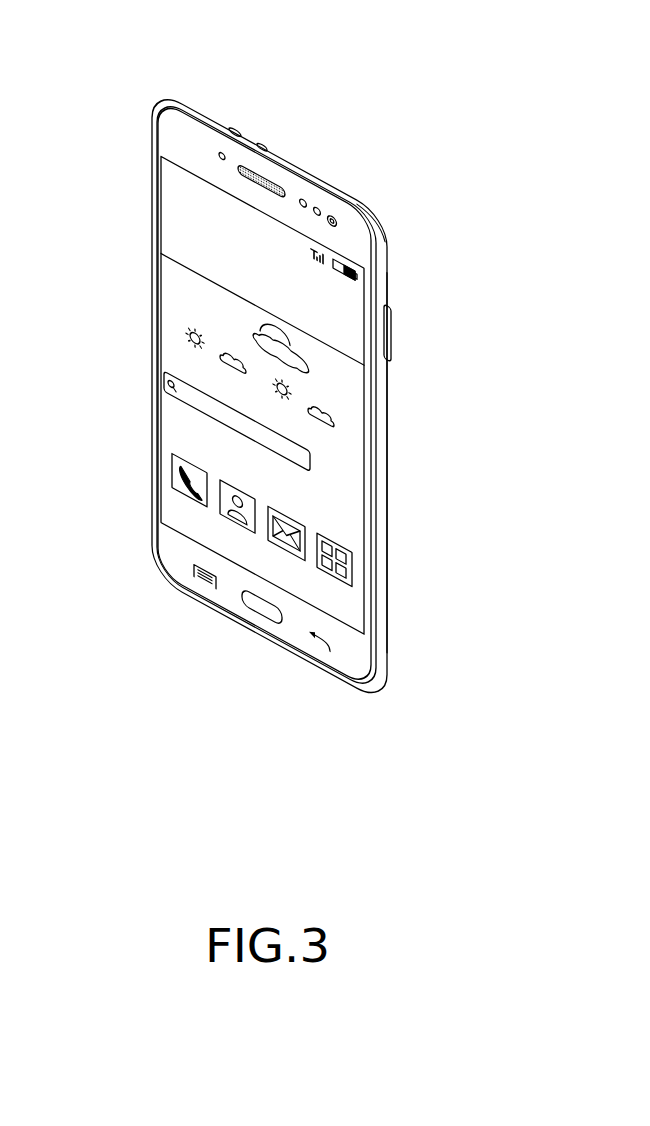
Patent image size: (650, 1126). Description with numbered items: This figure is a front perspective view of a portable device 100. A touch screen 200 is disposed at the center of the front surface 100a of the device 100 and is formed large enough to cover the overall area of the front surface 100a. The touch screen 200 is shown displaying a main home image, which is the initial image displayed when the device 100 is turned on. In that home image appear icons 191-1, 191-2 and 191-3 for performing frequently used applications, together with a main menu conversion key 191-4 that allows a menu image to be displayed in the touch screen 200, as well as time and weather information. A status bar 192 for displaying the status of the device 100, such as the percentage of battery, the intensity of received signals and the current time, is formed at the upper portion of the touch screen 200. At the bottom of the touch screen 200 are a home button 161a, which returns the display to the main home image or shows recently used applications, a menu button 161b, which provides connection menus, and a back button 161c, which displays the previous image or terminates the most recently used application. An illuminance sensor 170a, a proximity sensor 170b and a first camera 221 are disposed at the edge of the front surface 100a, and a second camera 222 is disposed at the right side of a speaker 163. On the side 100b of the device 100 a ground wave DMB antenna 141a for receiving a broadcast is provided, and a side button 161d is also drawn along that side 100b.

The device 100 is at (125, 66).
The front surface 100a is at (170, 140).
The side 100b is at (384, 433).
The ground wave DMB antenna 141a is at (380, 222).
The home button 161a is at (262, 612).
The menu button 161b is at (195, 568).
The back button 161c is at (313, 652).
The side key 161d is at (386, 328).
The speaker 163 is at (247, 167).
The illuminance sensor 170a is at (318, 206).
The proximity sensor 170b is at (334, 215).
The icon 191-1 is at (188, 460).
The icon 191-2 is at (234, 484).
The icon 191-3 is at (300, 512).
The main menu conversion key 191-4 is at (338, 541).
The status bar 192 is at (163, 172).
The touch screen 200 is at (172, 340).
The first camera 221 is at (303, 199).
The second camera 222 is at (219, 155).